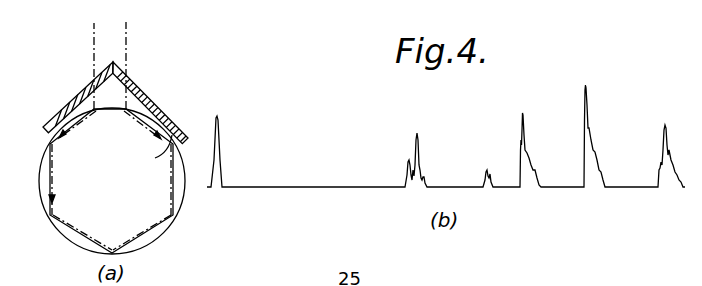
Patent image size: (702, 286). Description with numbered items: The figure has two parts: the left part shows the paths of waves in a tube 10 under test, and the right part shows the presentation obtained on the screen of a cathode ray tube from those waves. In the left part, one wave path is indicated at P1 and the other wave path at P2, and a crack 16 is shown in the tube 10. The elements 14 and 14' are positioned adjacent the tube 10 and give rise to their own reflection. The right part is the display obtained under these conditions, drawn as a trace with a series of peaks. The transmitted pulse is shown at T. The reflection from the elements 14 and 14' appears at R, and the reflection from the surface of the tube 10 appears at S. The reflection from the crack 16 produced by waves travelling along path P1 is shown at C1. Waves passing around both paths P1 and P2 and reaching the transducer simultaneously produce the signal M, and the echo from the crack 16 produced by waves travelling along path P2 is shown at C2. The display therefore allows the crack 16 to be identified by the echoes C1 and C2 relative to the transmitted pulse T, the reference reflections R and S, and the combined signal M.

The tube 10 is at (42, 196).
The reflecting element 14 is at (150, 103).
The reflecting element 14' is at (78, 97).
The crack 16 is at (170, 138).
The wave path P1 is at (173, 190).
The wave path P2 is at (51, 162).
The transmitted pulse T is at (222, 135).
The reflection from 14 and 14' R is at (415, 140).
The reflection from the surface of the tube S is at (490, 167).
The reflection from the crack along path P1 C1 is at (522, 120).
The signal M is at (592, 95).
The echo from the crack along path P2 C2 is at (665, 130).